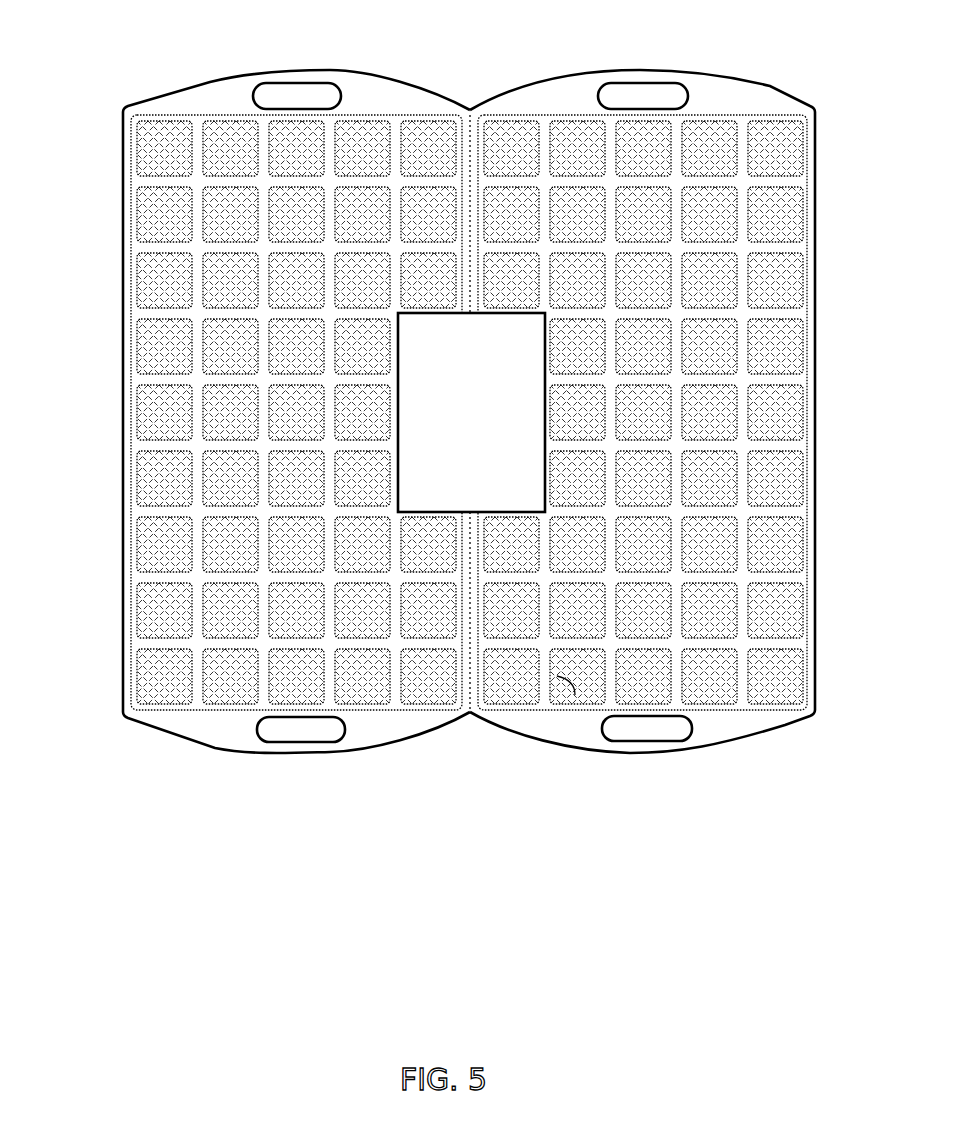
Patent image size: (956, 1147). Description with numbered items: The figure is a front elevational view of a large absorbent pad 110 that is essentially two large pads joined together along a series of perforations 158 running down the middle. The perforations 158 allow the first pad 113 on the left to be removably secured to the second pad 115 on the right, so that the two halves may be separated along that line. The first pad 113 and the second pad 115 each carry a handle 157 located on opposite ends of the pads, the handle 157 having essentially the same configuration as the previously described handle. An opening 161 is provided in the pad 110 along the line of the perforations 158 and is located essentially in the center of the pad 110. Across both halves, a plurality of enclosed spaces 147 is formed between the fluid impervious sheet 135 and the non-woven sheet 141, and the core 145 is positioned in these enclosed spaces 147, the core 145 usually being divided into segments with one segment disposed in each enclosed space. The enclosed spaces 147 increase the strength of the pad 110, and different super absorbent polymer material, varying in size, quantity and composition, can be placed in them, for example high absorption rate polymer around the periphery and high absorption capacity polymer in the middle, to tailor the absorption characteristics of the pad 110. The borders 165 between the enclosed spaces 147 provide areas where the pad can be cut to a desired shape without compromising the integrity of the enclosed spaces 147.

The pad 110 is at (90, 445).
The first pad 113 is at (125, 555).
The second pad 115 is at (818, 550).
The fluid impervious sheet 135 is at (716, 728).
The non-woven sheet 141 is at (773, 640).
The core 145 is at (562, 697).
The enclosed spaces 147 is at (715, 278).
The handle 157 is at (645, 62).
The fold line 158 is at (471, 104).
The opening 161 is at (447, 432).
The borders 165 is at (748, 477).